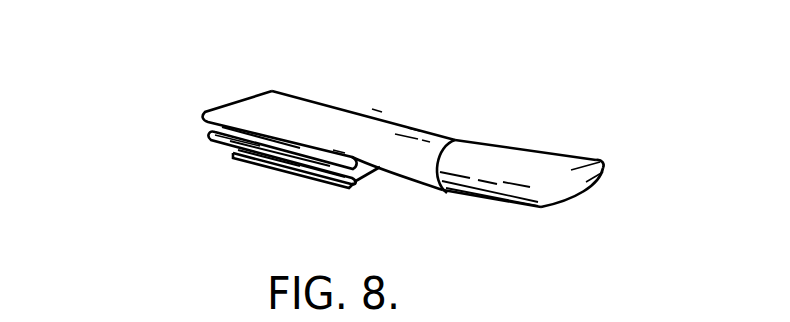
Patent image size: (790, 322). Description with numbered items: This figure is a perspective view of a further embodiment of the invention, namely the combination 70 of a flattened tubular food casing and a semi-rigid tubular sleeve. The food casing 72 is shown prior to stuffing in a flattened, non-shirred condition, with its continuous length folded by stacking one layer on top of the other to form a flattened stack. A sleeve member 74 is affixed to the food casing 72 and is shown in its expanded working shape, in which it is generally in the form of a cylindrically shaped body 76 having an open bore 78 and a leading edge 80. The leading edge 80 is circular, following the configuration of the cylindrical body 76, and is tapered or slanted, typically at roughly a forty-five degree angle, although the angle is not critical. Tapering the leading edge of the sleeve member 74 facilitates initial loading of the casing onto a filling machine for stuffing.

The combination 70 is at (387, 134).
The food casing 72 is at (206, 139).
The sleeve member 74 is at (567, 166).
The cylindrically shaped body 76 is at (497, 185).
The open bore 78 is at (553, 196).
The leading edge 80 is at (597, 177).